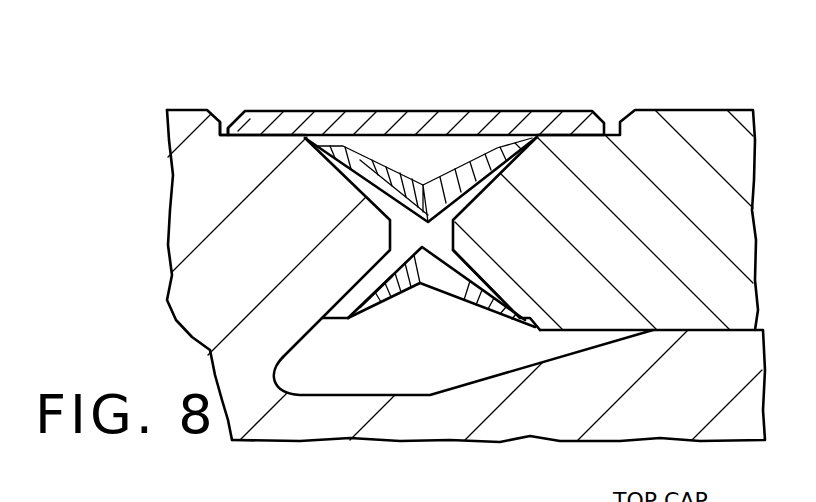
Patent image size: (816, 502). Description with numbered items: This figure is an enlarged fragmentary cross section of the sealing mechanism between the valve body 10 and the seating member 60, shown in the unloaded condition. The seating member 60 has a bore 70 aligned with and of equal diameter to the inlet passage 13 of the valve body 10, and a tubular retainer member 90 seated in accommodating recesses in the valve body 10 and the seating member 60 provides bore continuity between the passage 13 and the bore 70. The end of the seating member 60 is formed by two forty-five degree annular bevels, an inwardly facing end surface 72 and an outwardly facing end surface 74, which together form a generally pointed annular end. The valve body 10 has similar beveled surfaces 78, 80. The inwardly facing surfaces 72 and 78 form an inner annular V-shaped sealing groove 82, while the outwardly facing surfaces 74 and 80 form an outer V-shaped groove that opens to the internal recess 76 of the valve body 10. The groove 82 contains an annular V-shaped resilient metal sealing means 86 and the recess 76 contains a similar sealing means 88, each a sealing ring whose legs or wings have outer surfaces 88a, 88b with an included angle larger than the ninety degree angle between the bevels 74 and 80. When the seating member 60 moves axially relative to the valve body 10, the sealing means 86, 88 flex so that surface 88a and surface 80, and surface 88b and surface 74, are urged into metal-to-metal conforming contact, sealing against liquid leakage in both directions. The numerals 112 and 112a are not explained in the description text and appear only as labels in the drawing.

The valve body 10 is at (240, 291).
The inlet passage 13 is at (185, 110).
The seating member 60 is at (704, 194).
The bore 70 is at (692, 110).
The end surface 72 is at (478, 157).
The end surface 74 is at (486, 300).
The internal recess 76 is at (382, 348).
The beveled surface 78 is at (362, 172).
The beveled surface 80 is at (360, 310).
The inner annular V-shaped sealing groove 82 is at (442, 157).
The resilient metal sealing means 86 is at (402, 187).
The resilient metal sealing means 88 is at (420, 267).
The outer surface of sealing ring leg 88a is at (357, 267).
The outer surface of sealing ring leg 88b is at (505, 244).
The tubular retainer member 90 is at (285, 125).
The bottom block hatching 112 is at (556, 416).
The bottom block surface 112a is at (498, 416).